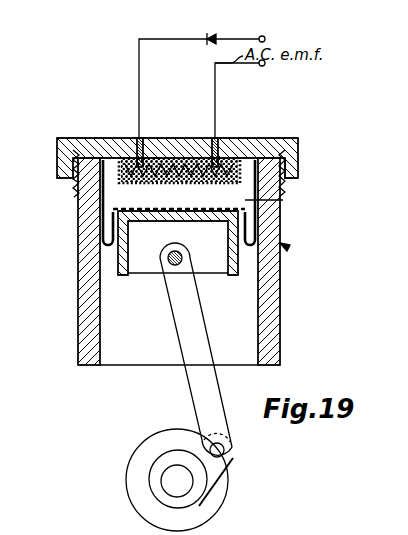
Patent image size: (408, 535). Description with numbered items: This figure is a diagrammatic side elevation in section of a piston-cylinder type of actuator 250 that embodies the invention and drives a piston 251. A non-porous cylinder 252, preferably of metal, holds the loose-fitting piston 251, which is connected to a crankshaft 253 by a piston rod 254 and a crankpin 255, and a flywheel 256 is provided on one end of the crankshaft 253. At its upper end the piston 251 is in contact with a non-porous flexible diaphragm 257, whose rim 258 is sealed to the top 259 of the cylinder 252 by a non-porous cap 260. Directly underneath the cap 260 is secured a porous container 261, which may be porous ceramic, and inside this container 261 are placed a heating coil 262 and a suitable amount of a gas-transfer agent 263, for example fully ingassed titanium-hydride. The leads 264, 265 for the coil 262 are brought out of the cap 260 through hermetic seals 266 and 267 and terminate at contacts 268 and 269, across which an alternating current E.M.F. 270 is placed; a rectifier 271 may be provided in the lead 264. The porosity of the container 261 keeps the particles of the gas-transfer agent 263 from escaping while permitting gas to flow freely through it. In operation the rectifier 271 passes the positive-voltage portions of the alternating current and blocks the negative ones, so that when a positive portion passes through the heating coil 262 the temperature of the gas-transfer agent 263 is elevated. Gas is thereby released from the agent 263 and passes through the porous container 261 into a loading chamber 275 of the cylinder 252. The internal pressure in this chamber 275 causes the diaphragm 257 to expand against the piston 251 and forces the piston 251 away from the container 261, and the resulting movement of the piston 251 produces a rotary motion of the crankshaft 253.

The lead 264 is at (139, 91).
The rectifier 271 is at (212, 35).
The contact 268 is at (264, 36).
The lead 265 is at (216, 100).
The contact 269 is at (263, 66).
The alternating current E.M.F. 270 is at (226, 63).
The cap 260 is at (62, 138).
The gas-transfer agent 263 is at (248, 138).
The rim 258 is at (103, 128).
The top 259 is at (80, 195).
The hermetic seal 266 is at (134, 138).
The hermetic seal 267 is at (219, 140).
The heating coil 262 is at (193, 165).
The porous container 261 is at (193, 184).
The actuator 250 is at (286, 247).
The cylinder 252 is at (94, 322).
The flexible diaphragm 257 is at (127, 207).
The piston 251 is at (178, 229).
The piston rod 254 is at (192, 398).
The crankpin 255 is at (214, 475).
The crankshaft 253 is at (185, 486).
The flywheel 256 is at (143, 508).
The loading chamber 275 is at (283, 200).